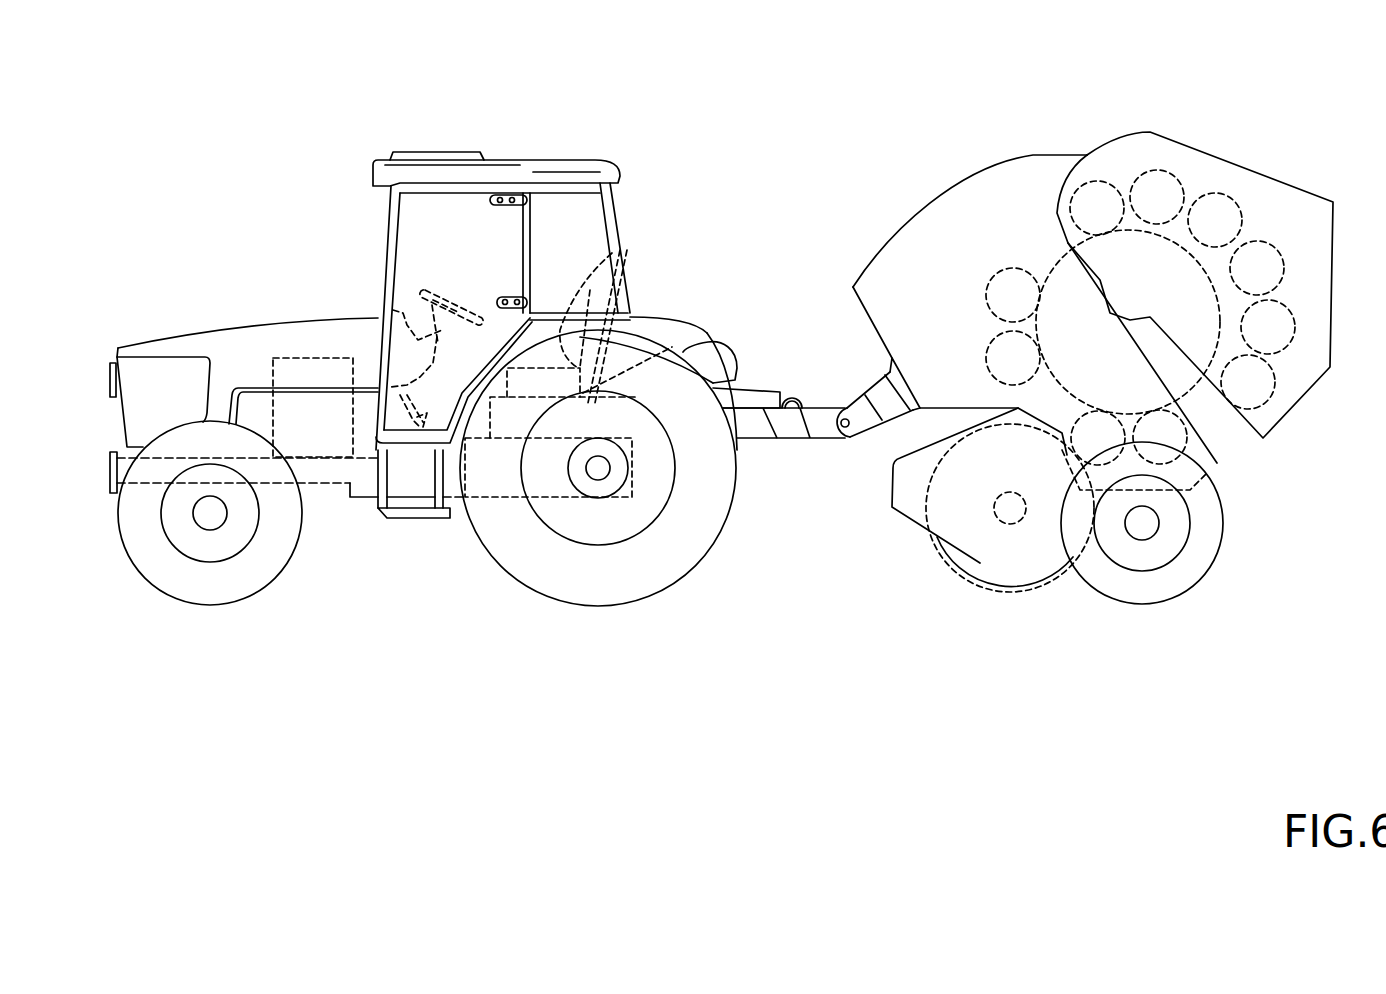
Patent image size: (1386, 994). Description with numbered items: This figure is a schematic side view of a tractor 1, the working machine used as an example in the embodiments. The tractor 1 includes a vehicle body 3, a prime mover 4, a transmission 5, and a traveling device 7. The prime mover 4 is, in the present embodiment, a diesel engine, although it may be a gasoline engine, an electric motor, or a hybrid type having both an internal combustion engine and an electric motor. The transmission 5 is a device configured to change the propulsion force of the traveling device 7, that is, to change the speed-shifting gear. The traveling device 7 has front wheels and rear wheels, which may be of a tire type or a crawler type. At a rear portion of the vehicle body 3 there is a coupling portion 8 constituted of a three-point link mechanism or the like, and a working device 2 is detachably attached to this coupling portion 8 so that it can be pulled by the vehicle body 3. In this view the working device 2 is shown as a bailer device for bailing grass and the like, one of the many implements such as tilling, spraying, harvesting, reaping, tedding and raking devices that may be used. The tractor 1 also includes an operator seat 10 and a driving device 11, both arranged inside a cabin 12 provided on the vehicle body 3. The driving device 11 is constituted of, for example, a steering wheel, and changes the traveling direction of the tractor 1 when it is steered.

The tractor 1 is at (558, 113).
The working device 2 is at (1221, 110).
The vehicle body 3 is at (338, 515).
The prime mover 4 is at (318, 357).
The transmission 5 is at (455, 485).
The traveling device 7 is at (502, 622).
The coupling portion 8 is at (750, 348).
The operator seat 10 is at (612, 253).
The driving device 11 is at (460, 290).
The cabin 12 is at (610, 207).